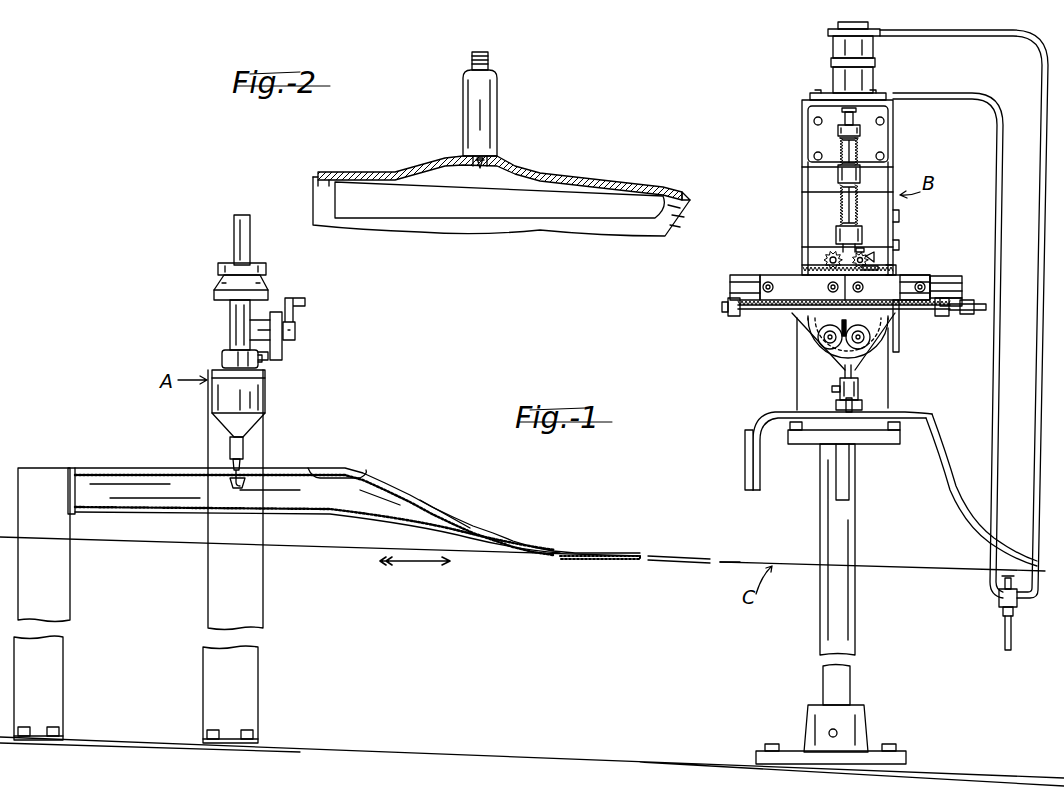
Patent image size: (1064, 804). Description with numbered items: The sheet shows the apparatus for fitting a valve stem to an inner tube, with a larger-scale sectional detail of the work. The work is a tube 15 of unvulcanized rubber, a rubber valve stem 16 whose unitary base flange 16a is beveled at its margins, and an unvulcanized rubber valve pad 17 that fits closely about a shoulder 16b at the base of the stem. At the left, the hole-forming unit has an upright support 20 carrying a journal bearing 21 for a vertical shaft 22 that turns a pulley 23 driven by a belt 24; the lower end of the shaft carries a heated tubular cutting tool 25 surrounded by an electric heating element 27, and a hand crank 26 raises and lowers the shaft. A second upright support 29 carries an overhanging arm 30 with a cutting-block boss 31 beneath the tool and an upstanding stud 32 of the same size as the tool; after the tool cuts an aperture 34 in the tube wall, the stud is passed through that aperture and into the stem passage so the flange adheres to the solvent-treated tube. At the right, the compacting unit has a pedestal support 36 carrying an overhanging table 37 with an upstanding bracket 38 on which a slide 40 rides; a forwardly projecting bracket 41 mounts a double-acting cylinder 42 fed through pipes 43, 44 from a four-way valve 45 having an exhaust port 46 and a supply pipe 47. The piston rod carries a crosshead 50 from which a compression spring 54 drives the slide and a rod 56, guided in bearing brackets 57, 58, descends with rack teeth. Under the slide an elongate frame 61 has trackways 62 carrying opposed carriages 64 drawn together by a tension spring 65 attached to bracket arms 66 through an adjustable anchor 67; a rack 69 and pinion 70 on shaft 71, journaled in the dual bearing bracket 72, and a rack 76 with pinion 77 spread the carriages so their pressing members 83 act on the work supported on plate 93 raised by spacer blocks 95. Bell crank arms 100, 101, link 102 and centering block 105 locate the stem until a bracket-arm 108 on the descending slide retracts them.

In FIG. 2, the tube 15 is at (676, 196).
In FIG. 1, the tube 15 is at (452, 512).
In FIG. 2, the valve stem 16 is at (465, 100).
In FIG. 1, the valve stem 16 is at (836, 394).
In FIG. 2, the base flange 16a is at (410, 172).
In FIG. 2, the shoulder 16b is at (447, 165).
In FIG. 1, the valve pad 17 is at (820, 415).
In FIG. 1, the upright support 20 is at (250, 594).
In FIG. 1, the journal bearing 21 is at (229, 330).
In FIG. 1, the vertical shaft 22 is at (252, 245).
In FIG. 1, the pulley 23 is at (213, 287).
In FIG. 1, the driving belt 24 is at (218, 268).
In FIG. 1, the tubular punch or cutting tool 25 is at (230, 457).
In FIG. 1, the hand crank 26 is at (296, 312).
In FIG. 1, the heating element 27 is at (250, 401).
In FIG. 1, the second upright support 29 is at (56, 582).
In FIG. 2, the overhanging arm 30 is at (598, 212).
In FIG. 1, the overhanging arm 30 is at (194, 478).
In FIG. 1, the boss 31 is at (236, 482).
In FIG. 2, the stud 32 is at (470, 178).
In FIG. 1, the stud 32 is at (312, 472).
In FIG. 2, the aperture 34 is at (481, 170).
In FIG. 1, the pedestal support 36 is at (856, 601).
In FIG. 1, the overhanging table 37 is at (872, 445).
In FIG. 1, the upstanding bracket 38 is at (892, 374).
In FIG. 1, the slide 40 is at (802, 210).
In FIG. 1, the forwardly projecting bracket 41 is at (893, 128).
In FIG. 1, the fluid pressure operated cylinder 42 is at (868, 67).
In FIG. 1, the inlet and outlet pipe 43 is at (1004, 112).
In FIG. 1, the inlet and outlet pipe 44 is at (1040, 150).
In FIG. 1, the four-way valve 45 is at (1002, 608).
In FIG. 1, the exhaust port 46 is at (998, 590).
In FIG. 1, the supply pipe 47 is at (1005, 645).
In FIG. 1, the crosshead 50 is at (838, 129).
In FIG. 1, the compression spring 54 is at (840, 195).
In FIG. 1, the rack rod 56 is at (860, 150).
In FIG. 1, the bearing bracket 57 is at (838, 172).
In FIG. 1, the bearing bracket 58 is at (836, 234).
In FIG. 1, the elongate frame 61 is at (950, 276).
In FIG. 1, the trackway 62 is at (962, 285).
In FIG. 1, the carriage 64 is at (750, 275).
In FIG. 1, the tension spring 65 is at (812, 309).
In FIG. 1, the L-shaped bracket arm 66 is at (742, 312).
In FIG. 1, the adjustable spring-anchor 67 is at (976, 315).
In FIG. 1, the rack 69 is at (896, 272).
In FIG. 1, the pinion 70 is at (866, 264).
In FIG. 1, the horizontal shaft 71 is at (866, 256).
In FIG. 1, the dual bearing bracket 72 is at (862, 254).
In FIG. 1, the rack 76 is at (780, 282).
In FIG. 1, the pinion 77 is at (824, 258).
In FIG. 1, the work pressing member 83 is at (812, 344).
In FIG. 1, the plate 93 is at (764, 428).
In FIG. 1, the spacer block 95 is at (796, 431).
In FIG. 1, the bell crank arm 100 is at (860, 384).
In FIG. 1, the bell crank arm 101 is at (900, 328).
In FIG. 1, the link 102 is at (864, 402).
In FIG. 1, the centering block 105 is at (832, 388).
In FIG. 1, the bracket-arm 108 is at (870, 260).